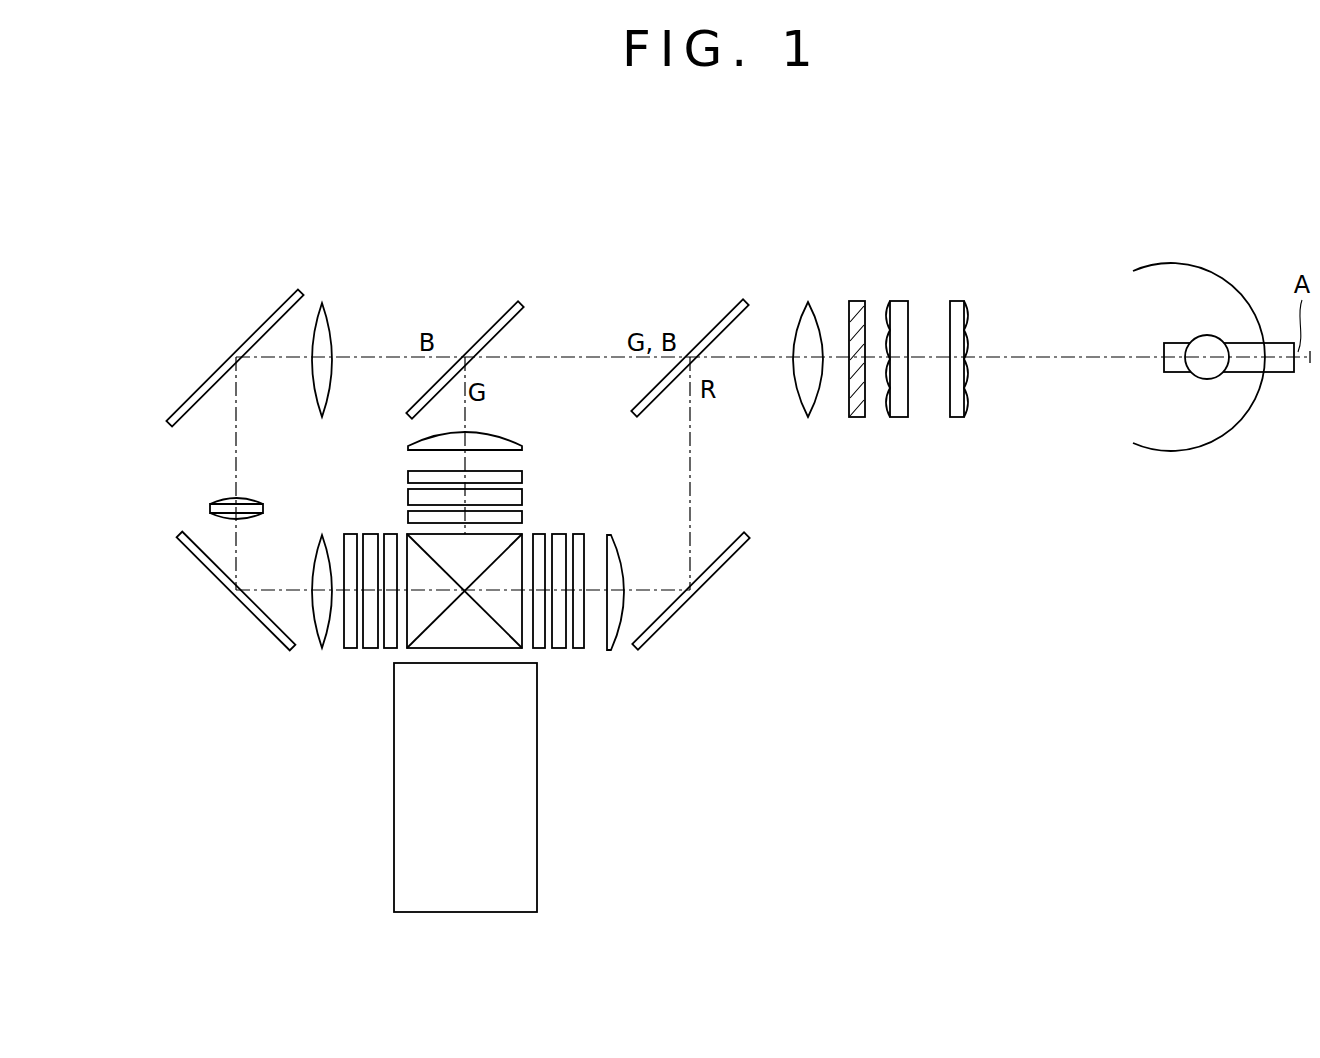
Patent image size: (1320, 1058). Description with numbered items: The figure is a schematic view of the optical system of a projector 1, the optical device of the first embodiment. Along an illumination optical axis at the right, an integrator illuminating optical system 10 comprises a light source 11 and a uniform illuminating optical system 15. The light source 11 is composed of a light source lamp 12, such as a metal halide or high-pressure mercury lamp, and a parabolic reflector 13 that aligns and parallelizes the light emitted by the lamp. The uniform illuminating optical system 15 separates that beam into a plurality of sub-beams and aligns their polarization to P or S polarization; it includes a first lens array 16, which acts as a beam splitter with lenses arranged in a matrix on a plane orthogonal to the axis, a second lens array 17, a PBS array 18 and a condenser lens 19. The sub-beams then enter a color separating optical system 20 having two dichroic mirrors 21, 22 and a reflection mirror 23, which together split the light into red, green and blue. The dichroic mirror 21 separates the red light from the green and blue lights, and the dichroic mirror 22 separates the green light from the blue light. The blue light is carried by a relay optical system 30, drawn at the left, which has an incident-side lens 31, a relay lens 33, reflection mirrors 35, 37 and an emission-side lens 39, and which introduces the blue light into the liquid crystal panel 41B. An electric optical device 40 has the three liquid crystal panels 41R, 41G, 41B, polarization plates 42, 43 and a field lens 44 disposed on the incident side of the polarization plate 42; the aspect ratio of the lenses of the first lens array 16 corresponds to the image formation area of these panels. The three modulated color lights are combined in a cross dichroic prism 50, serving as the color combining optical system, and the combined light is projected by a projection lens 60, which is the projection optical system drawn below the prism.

The projector 1 is at (880, 562).
The integrator illuminating optical system 10 is at (1154, 186).
The light source 11 is at (1133, 270).
The light source lamp 12 is at (1213, 378).
The parabolic reflector 13 is at (1143, 440).
The uniform illuminating optical system 15 is at (797, 228).
The first lens array 16 is at (955, 300).
The second lens array 17 is at (898, 300).
The PBS array 18 is at (856, 300).
The condenser lens 19 is at (804, 300).
The color separating optical system 20 is at (600, 302).
The dichroic mirror 21 is at (720, 320).
The dichroic mirror 22 is at (490, 320).
The reflection mirror 23 is at (723, 560).
The relay optical system 30 is at (197, 492).
The incident-side lens 31 is at (328, 330).
The relay lens 33 is at (252, 508).
The reflection mirror 35 is at (260, 322).
The reflection mirror 37 is at (200, 567).
The emission-side lens 39 is at (313, 567).
The electric optical device 40 is at (357, 682).
The liquid crystal panel 41B is at (365, 530).
The liquid crystal panel 41G is at (520, 492).
The liquid crystal panel 41R is at (560, 533).
The polarization plate 42 is at (407, 473).
The polarization plate 43 is at (407, 517).
The field lens 44 is at (500, 437).
The cross dichroic prism 50 is at (513, 622).
The projection lens 60 is at (522, 838).